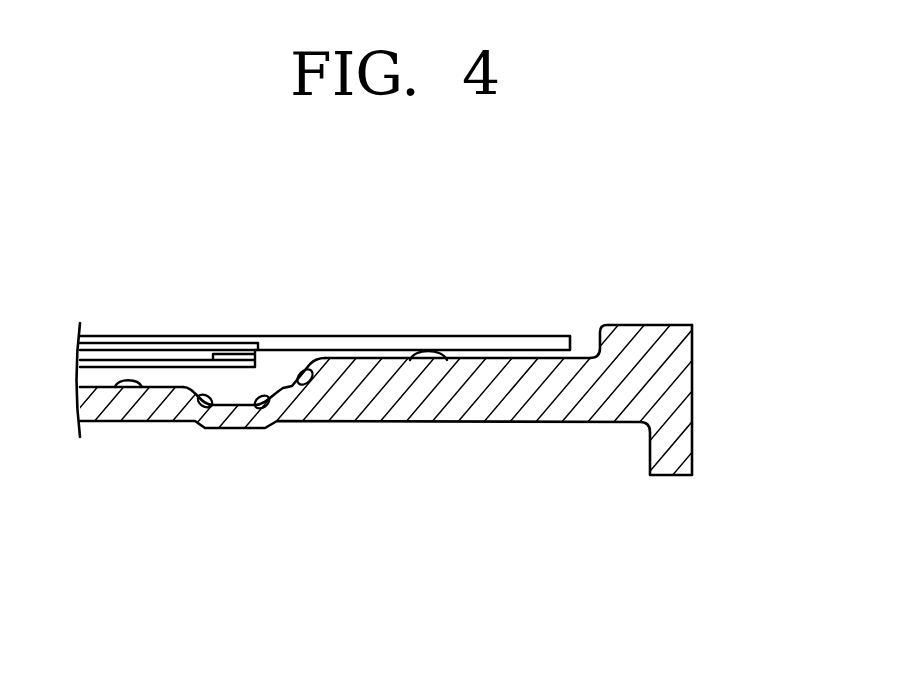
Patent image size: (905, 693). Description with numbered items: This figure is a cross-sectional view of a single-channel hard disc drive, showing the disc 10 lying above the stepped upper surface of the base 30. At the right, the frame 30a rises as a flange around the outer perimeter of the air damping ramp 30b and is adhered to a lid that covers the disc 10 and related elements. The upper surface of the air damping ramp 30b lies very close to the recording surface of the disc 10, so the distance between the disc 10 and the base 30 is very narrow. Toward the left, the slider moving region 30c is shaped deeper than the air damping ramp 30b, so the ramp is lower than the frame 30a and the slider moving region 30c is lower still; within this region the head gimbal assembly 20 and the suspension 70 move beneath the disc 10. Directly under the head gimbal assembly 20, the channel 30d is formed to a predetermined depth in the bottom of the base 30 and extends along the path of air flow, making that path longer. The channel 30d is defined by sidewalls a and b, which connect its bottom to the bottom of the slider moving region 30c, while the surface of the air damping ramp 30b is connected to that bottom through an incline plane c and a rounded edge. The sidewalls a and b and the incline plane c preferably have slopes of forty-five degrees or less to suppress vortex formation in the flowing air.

The disc 10 is at (505, 337).
The head gimbal assembly 20 is at (267, 339).
The base 30 is at (707, 313).
The frame 30a is at (648, 325).
The air damping ramp 30b is at (447, 357).
The slider moving region 30c is at (122, 389).
The channel 30d is at (236, 405).
The suspension 70 is at (146, 362).
The sidewall a is at (222, 408).
The sidewall b is at (257, 407).
The incline plane c is at (303, 382).